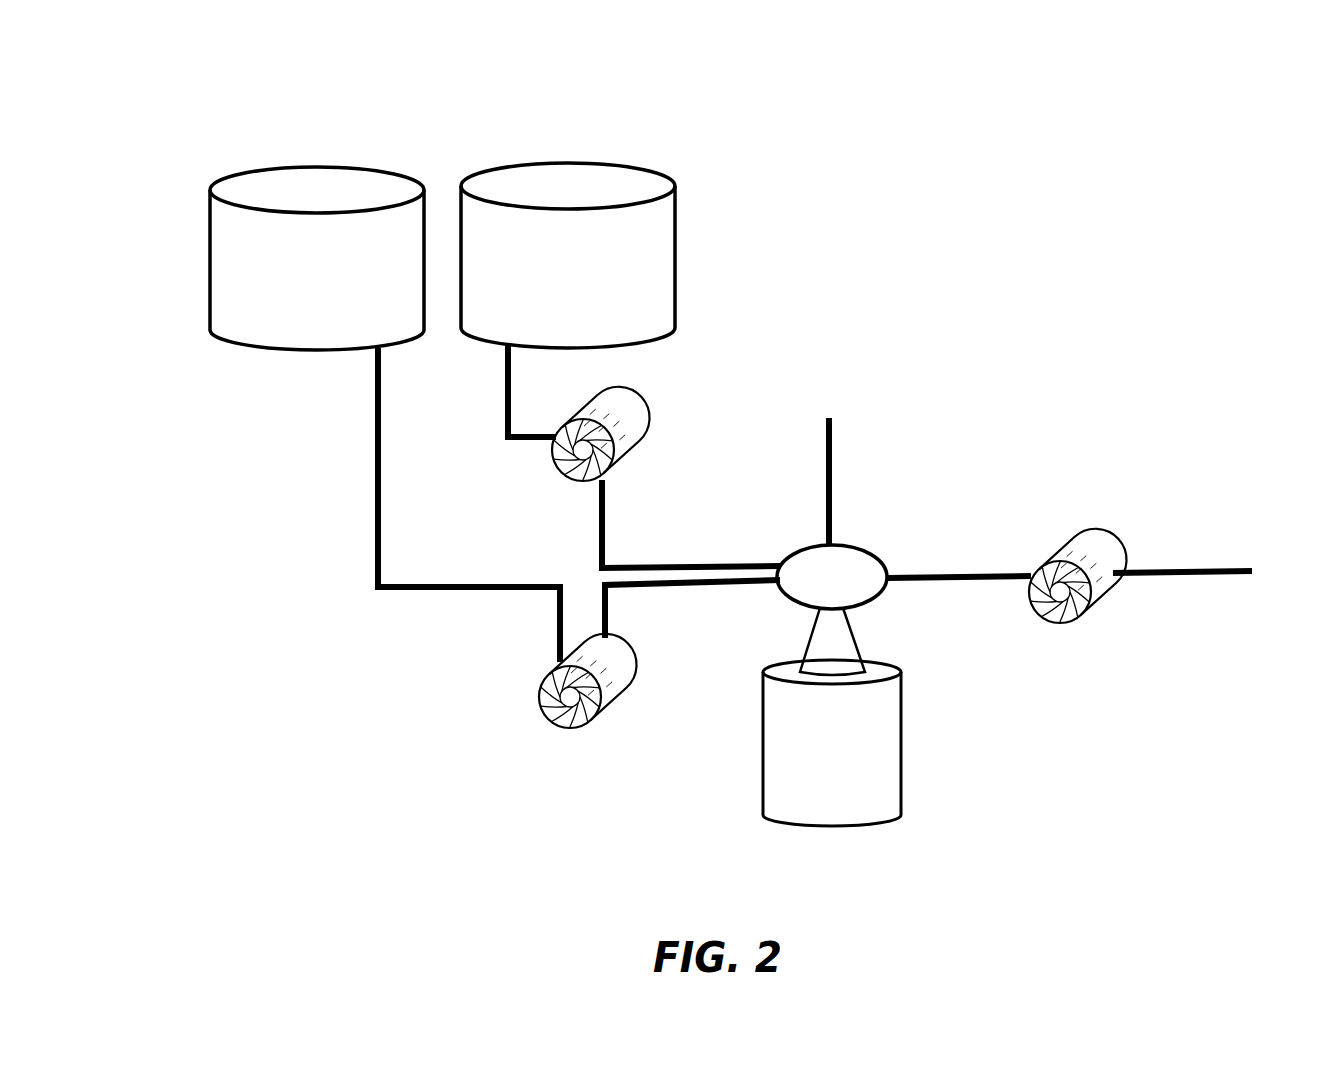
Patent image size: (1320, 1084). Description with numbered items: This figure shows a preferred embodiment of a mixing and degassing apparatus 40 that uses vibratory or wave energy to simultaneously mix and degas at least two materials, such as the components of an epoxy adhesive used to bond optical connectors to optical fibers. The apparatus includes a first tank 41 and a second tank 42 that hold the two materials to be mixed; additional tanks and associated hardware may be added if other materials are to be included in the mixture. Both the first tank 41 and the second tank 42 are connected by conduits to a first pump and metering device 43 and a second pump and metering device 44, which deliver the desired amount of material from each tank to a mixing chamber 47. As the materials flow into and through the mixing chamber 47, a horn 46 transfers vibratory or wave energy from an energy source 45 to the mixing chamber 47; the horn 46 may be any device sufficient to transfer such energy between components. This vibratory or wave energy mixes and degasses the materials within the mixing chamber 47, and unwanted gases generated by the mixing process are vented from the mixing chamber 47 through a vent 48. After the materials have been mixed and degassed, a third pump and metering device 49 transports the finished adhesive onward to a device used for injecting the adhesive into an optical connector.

The mixing and degassing apparatus 40 is at (383, 597).
The first tank 41 is at (315, 165).
The second tank 42 is at (566, 163).
The first pump and metering device 43 is at (578, 727).
The second pump and metering device 44 is at (638, 408).
The energy source 45 is at (873, 820).
The horn 46 is at (857, 640).
The mixing chamber 47 is at (866, 548).
The vent 48 is at (827, 413).
The third pump and metering device 49 is at (1112, 545).